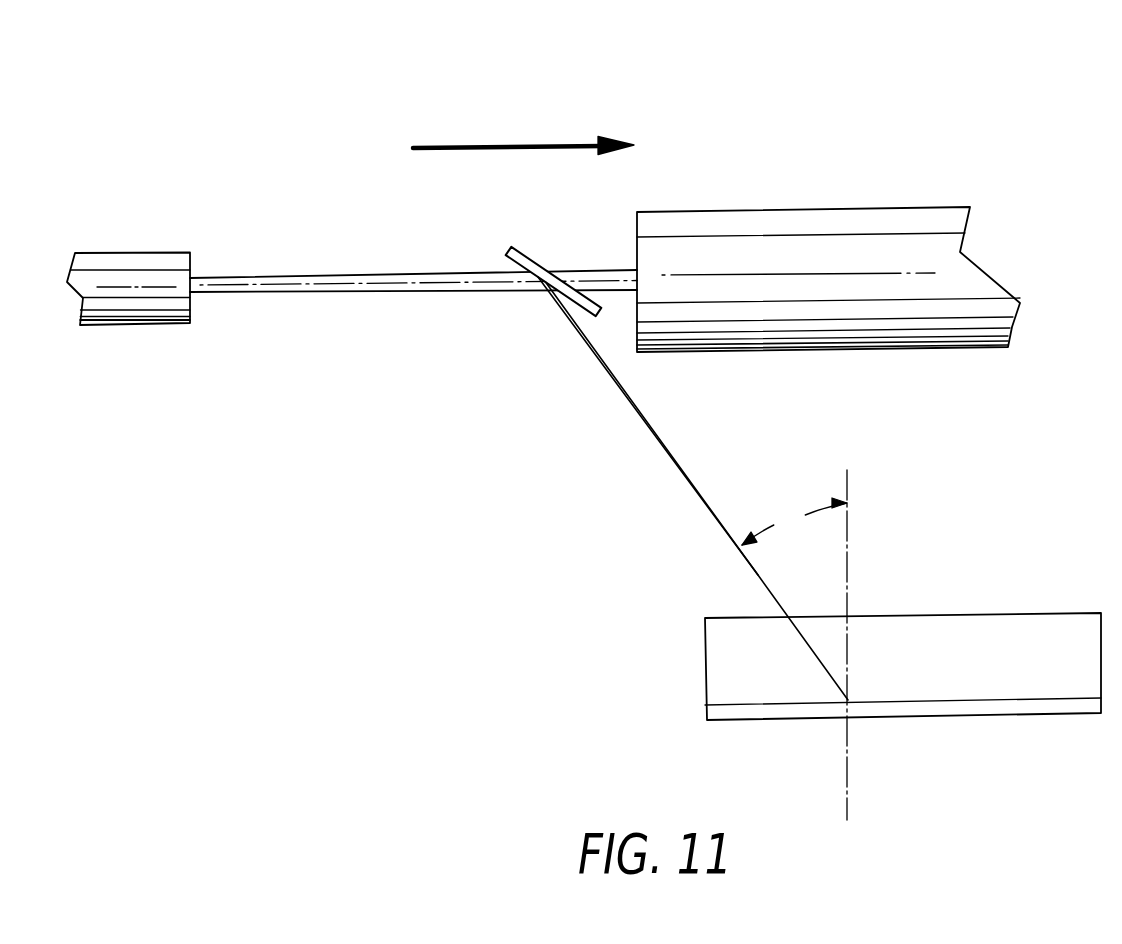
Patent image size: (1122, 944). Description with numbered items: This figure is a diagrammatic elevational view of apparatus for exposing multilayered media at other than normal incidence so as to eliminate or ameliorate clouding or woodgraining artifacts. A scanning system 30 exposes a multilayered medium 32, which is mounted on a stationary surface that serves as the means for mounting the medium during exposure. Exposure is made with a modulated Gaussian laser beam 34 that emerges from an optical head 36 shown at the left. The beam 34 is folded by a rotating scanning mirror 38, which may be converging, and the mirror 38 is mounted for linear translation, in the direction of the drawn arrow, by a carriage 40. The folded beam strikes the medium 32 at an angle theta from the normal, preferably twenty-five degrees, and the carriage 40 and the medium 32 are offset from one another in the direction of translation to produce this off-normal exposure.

The scanning system 30 is at (729, 112).
The multilayered medium 32 is at (990, 627).
The modulated Gaussian laser beam 34 is at (370, 282).
The optical head 36 is at (168, 263).
The rotating scanning mirror 38 is at (545, 268).
The carriage 40 is at (768, 220).